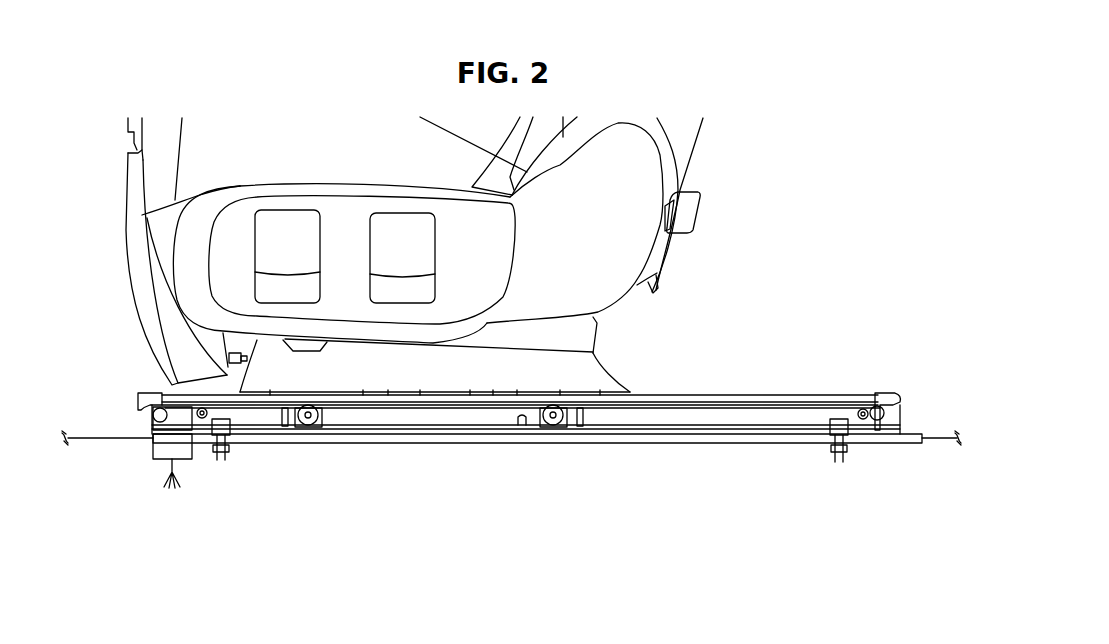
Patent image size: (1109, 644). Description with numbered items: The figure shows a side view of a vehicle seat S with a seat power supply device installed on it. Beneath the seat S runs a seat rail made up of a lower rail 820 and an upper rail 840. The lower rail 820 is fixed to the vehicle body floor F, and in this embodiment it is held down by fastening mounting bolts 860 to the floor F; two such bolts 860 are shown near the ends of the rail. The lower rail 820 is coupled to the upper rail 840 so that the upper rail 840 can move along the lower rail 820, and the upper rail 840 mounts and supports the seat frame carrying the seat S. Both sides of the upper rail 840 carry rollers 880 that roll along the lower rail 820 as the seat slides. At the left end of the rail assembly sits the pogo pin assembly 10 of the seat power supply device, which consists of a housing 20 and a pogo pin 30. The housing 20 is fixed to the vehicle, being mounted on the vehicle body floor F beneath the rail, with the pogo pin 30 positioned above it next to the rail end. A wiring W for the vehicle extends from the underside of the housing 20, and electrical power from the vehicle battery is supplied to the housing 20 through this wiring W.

The vehicle seat S is at (628, 232).
The vehicle body floor F is at (942, 437).
The wiring W is at (178, 474).
The pogo pin assembly 10 is at (78, 456).
The housing 20 is at (163, 446).
The pogo pin 30 is at (157, 416).
The lower rail 820 is at (665, 430).
The upper rail 840 is at (410, 420).
The mounting bolt 860 is at (228, 448).
The roller 880 is at (547, 425).